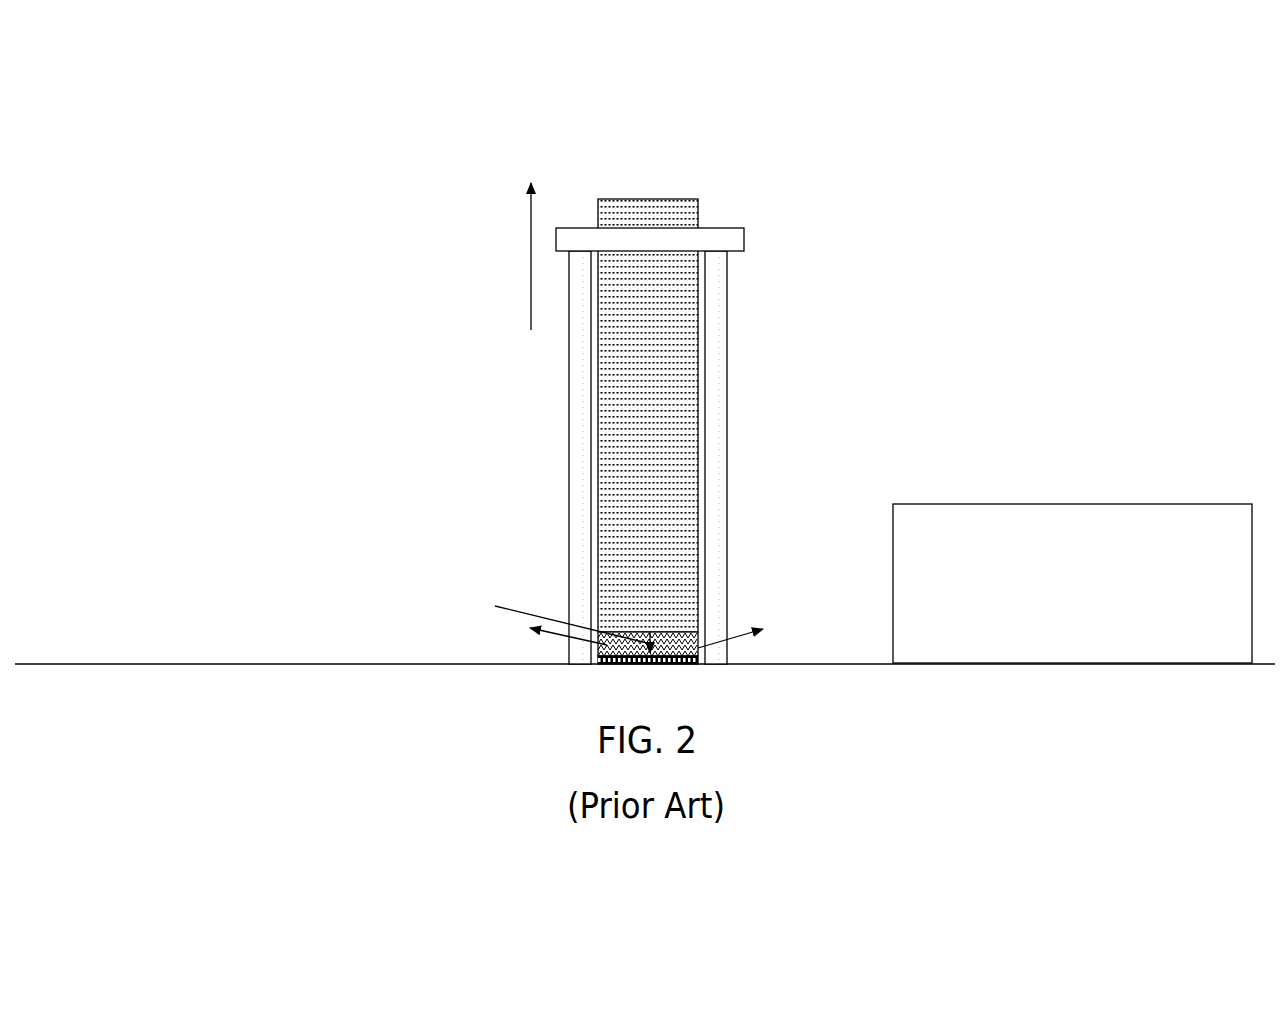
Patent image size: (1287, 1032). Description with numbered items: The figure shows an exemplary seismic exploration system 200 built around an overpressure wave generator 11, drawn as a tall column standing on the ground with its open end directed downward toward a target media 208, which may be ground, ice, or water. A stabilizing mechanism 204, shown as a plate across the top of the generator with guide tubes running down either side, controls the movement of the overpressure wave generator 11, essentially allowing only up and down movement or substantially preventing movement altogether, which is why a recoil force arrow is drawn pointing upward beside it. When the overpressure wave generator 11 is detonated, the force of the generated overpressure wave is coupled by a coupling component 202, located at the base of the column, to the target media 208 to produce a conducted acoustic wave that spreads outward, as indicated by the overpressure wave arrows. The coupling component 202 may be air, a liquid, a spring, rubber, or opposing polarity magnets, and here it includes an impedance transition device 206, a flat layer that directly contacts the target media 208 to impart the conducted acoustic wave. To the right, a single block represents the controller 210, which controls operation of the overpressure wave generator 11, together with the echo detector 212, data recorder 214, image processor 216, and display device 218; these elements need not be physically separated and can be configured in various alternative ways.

The seismic exploration system 200 is at (622, 429).
The stabilizing mechanism 204 is at (744, 242).
The overpressure wave generator 11 is at (660, 368).
The coupling component 202 is at (665, 653).
The impedance transition device 206 is at (698, 665).
The target media 208 is at (275, 688).
The controller 210 is at (1072, 522).
The echo detector 212 is at (1072, 522).
The data recorder 214 is at (1072, 522).
The image processor 216 is at (1072, 522).
The display device 218 is at (978, 508).